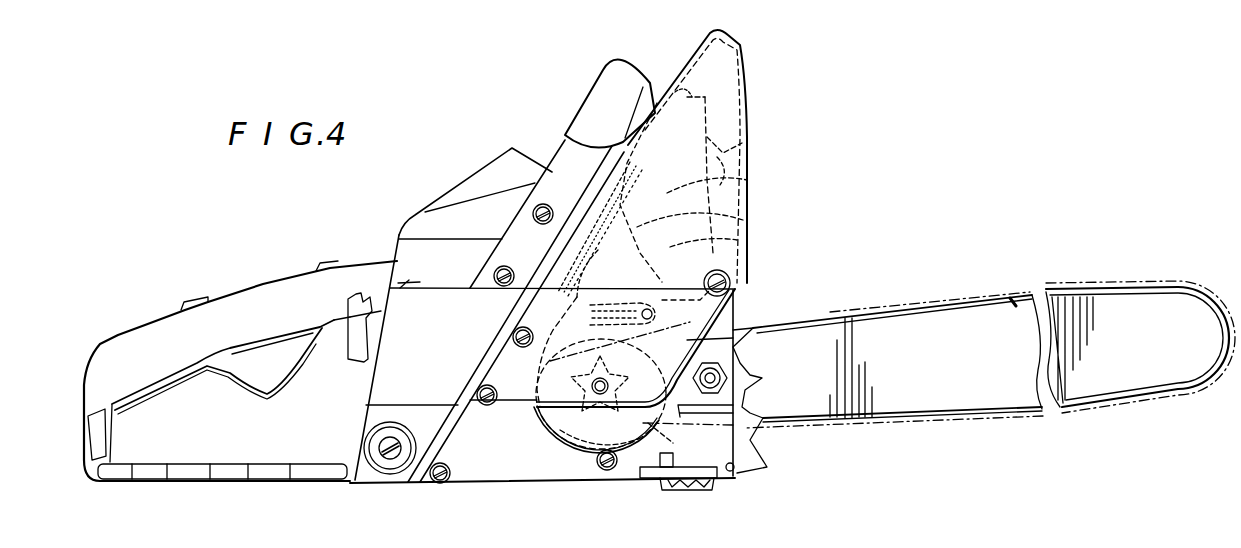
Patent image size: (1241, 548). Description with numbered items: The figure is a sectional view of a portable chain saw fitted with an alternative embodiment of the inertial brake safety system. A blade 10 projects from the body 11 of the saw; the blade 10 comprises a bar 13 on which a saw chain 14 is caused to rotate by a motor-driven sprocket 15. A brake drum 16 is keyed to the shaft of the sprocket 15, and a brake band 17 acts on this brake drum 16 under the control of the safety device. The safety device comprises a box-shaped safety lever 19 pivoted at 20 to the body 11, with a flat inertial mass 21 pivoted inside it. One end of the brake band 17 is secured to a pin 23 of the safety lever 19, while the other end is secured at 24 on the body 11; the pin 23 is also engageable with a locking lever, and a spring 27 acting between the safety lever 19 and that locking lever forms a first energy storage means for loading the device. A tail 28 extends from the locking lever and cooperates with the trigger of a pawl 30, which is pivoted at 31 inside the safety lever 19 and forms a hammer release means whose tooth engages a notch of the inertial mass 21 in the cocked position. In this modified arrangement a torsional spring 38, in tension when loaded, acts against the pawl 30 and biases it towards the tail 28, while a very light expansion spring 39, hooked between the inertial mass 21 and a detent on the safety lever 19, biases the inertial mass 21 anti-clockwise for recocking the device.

The blade 10 is at (1014, 300).
The body 11 is at (540, 487).
The bar 13 is at (920, 396).
The saw chain 14 is at (992, 414).
The sprocket 15 is at (567, 433).
The brake drum 16 is at (650, 433).
The brake band 17 is at (566, 312).
The safety lever 19 is at (760, 90).
The pivot 20 is at (732, 283).
The inertial mass 21 is at (683, 92).
The pin 23 is at (594, 184).
The securing point 24 is at (654, 316).
The spring 27 is at (548, 253).
The tail 28 is at (735, 306).
The pawl 30 is at (741, 218).
The pawl pivot 31 is at (742, 240).
The torsional spring 38 is at (745, 148).
The expansion spring 39 is at (746, 188).